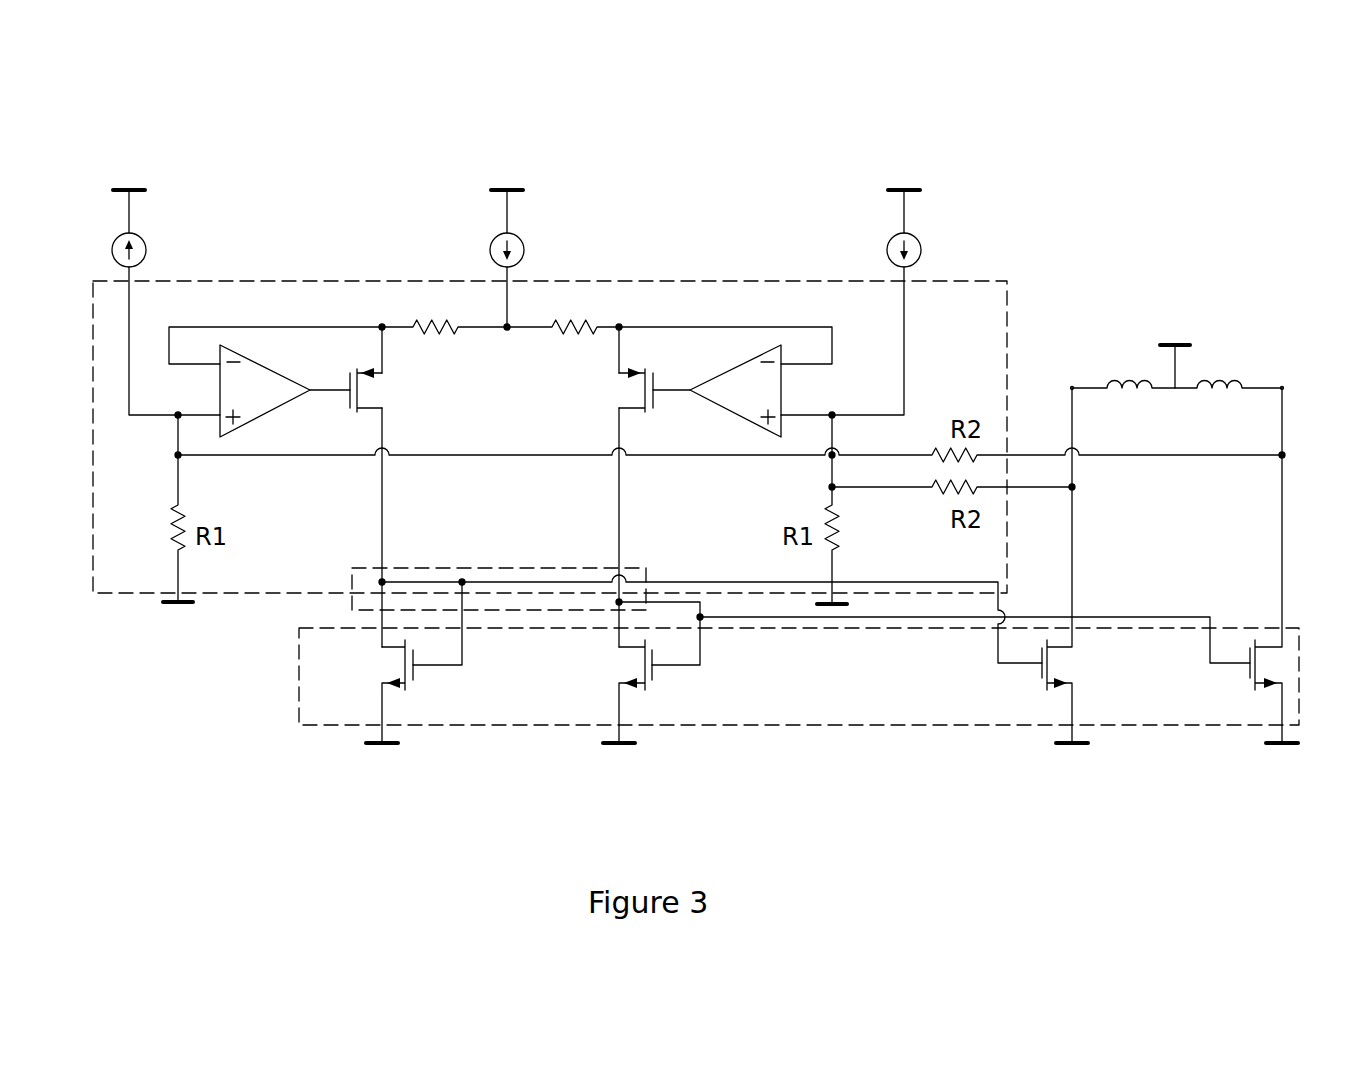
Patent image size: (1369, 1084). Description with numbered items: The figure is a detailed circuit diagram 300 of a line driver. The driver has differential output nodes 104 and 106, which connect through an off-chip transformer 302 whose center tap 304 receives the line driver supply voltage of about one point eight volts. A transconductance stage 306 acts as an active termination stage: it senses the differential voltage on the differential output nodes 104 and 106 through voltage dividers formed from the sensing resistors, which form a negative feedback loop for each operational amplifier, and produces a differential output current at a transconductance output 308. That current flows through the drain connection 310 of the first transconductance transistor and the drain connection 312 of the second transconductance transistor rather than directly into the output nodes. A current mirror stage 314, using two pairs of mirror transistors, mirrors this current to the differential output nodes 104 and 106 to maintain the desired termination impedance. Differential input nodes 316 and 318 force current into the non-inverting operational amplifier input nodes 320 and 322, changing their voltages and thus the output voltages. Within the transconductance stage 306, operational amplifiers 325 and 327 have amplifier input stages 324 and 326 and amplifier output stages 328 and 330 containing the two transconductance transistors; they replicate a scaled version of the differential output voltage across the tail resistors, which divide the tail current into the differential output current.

The circuit diagram 300 is at (128, 136).
The off-chip transformer 302 is at (1162, 413).
The center tap 304 is at (1165, 343).
The differential output node 104 is at (1072, 386).
The differential output node 106 is at (1282, 386).
The transconductance stage 306 is at (137, 577).
The transconductance output 308 is at (513, 568).
The drain connection 310 is at (382, 512).
The drain connection 312 is at (619, 512).
The current mirror stage 314 is at (340, 714).
The differential input node 316 is at (142, 236).
The differential input node 318 is at (915, 236).
The non-inverting operational amplifier input node 320 is at (210, 412).
The non-inverting operational amplifier input node 322 is at (803, 414).
The amplifier input stage 324 is at (190, 377).
The operational amplifier 325 is at (263, 402).
The amplifier input stage 326 is at (810, 382).
The operational amplifier 327 is at (728, 400).
The amplifier output stage 328 is at (343, 368).
The amplifier output stage 330 is at (673, 364).